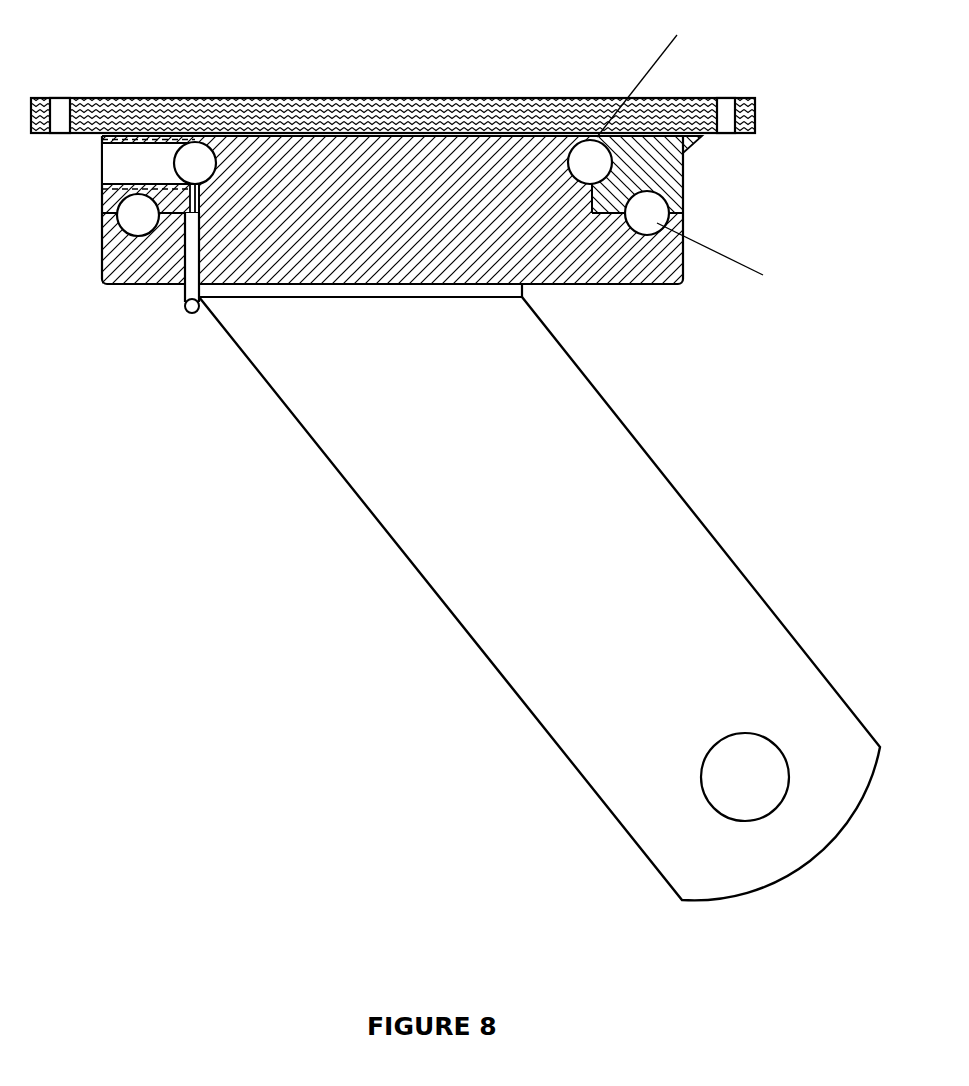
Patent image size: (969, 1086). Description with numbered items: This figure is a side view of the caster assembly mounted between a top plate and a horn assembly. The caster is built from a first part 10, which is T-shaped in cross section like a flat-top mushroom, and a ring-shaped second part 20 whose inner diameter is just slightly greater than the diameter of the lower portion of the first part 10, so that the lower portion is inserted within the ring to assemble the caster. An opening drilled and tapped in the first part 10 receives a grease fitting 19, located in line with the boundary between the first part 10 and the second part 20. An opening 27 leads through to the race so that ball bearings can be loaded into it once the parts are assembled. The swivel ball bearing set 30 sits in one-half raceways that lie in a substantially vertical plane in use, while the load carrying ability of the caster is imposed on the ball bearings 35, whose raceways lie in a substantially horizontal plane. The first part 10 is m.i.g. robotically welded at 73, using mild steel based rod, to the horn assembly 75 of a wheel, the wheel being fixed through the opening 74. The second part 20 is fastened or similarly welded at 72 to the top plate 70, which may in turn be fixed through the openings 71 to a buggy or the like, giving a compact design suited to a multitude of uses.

The first part 10 is at (133, 280).
The grease fitting 19 is at (180, 295).
The second part 20 is at (672, 178).
The opening 27 is at (112, 163).
The ball bearings 30 is at (182, 168).
The ball bearings 35 is at (125, 228).
The top plate 70 is at (122, 103).
The openings 71 is at (62, 105).
The weld location 72 is at (697, 145).
The weld location 73 is at (538, 297).
The opening 74 is at (717, 783).
The horn assembly 75 is at (447, 450).